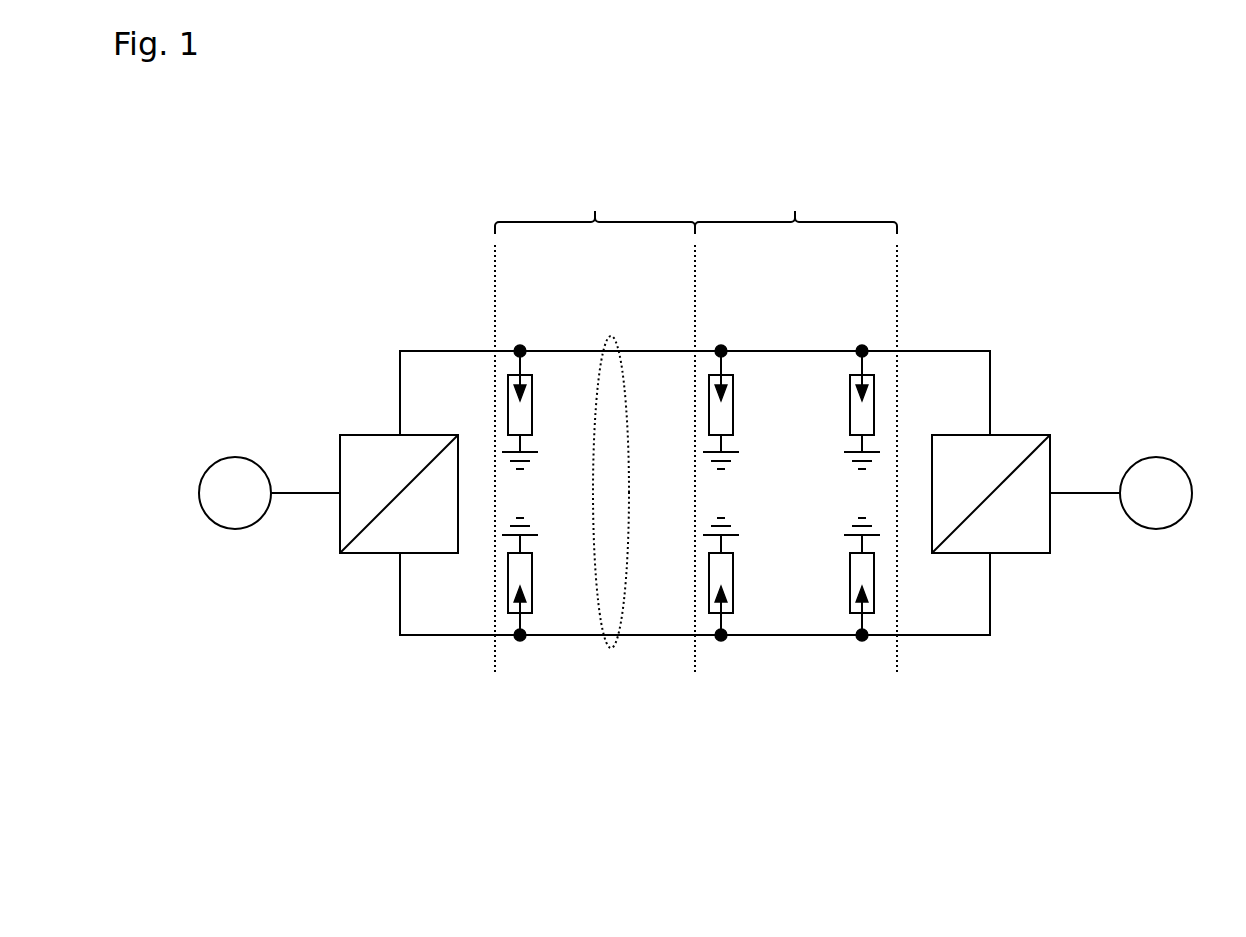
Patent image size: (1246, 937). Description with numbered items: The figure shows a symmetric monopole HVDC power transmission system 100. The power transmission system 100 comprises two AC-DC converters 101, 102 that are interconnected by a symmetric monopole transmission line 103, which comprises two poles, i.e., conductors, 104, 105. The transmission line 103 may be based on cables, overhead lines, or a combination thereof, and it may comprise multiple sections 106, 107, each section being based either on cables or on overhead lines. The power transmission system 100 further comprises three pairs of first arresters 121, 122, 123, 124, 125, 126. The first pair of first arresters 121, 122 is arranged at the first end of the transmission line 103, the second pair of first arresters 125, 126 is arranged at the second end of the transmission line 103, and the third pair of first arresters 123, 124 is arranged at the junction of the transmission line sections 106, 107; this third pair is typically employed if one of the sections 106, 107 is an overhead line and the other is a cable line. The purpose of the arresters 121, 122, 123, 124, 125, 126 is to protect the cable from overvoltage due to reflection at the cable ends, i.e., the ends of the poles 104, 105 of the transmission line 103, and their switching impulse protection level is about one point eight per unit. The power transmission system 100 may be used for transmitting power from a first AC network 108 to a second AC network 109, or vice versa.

The power transmission system 100 is at (207, 780).
The AC-DC converter 101 is at (383, 471).
The AC-DC converter 102 is at (1006, 471).
The symmetric monopole transmission line 103 is at (640, 492).
The pole 104 is at (695, 373).
The pole 105 is at (695, 621).
The transmission line section 106 is at (595, 420).
The transmission line section 107 is at (796, 420).
The first AC network 108 is at (247, 479).
The second AC network 109 is at (1144, 479).
The first arrester 121 is at (544, 407).
The first arrester 122 is at (544, 579).
The first arrester 123 is at (749, 407).
The first arrester 124 is at (749, 579).
The first arrester 125 is at (836, 407).
The first arrester 126 is at (836, 579).